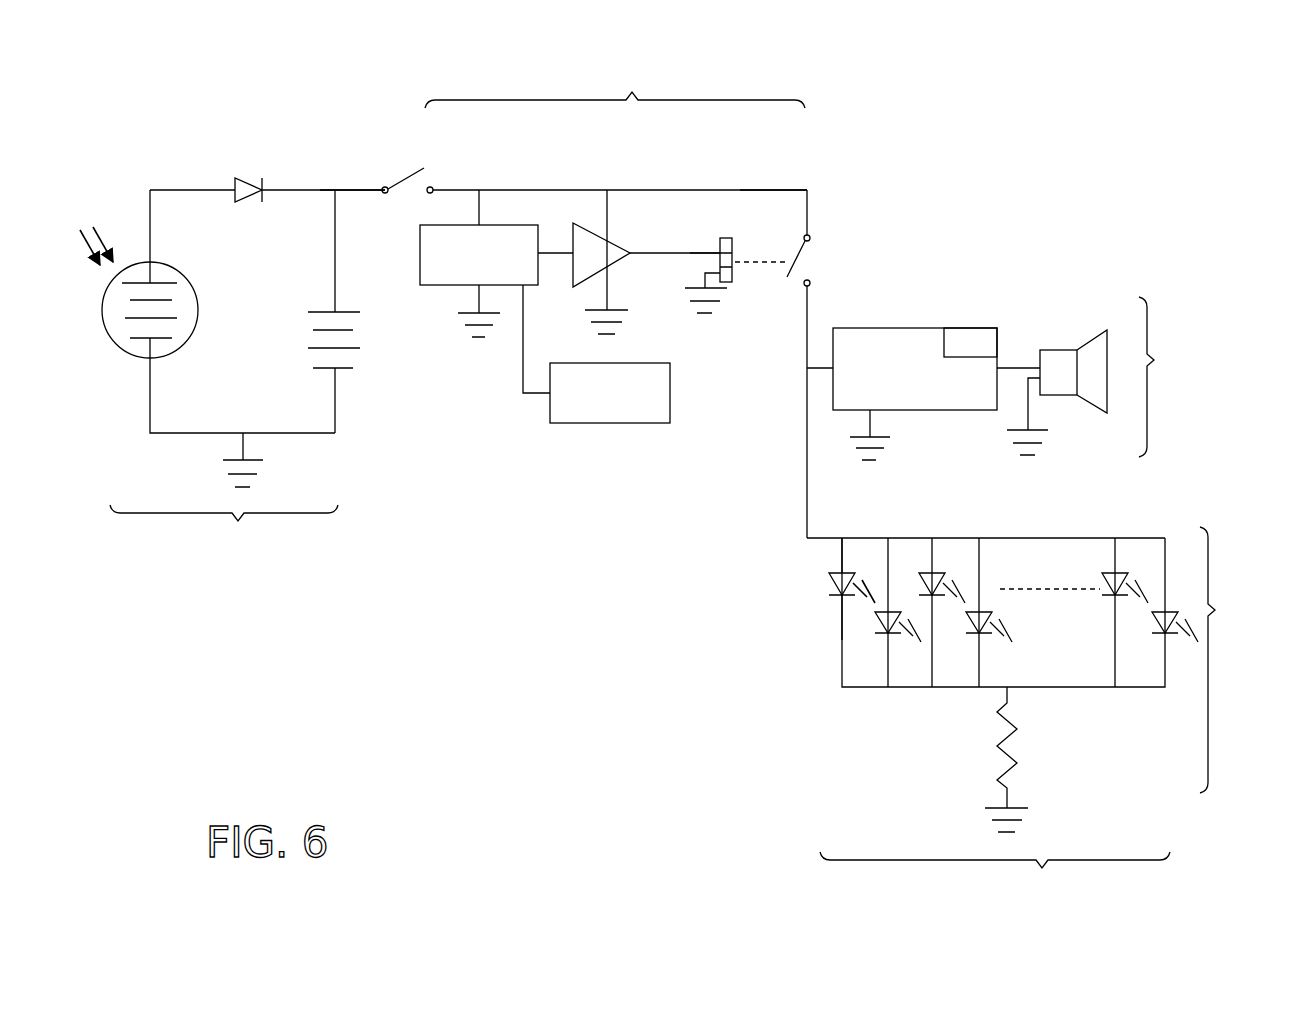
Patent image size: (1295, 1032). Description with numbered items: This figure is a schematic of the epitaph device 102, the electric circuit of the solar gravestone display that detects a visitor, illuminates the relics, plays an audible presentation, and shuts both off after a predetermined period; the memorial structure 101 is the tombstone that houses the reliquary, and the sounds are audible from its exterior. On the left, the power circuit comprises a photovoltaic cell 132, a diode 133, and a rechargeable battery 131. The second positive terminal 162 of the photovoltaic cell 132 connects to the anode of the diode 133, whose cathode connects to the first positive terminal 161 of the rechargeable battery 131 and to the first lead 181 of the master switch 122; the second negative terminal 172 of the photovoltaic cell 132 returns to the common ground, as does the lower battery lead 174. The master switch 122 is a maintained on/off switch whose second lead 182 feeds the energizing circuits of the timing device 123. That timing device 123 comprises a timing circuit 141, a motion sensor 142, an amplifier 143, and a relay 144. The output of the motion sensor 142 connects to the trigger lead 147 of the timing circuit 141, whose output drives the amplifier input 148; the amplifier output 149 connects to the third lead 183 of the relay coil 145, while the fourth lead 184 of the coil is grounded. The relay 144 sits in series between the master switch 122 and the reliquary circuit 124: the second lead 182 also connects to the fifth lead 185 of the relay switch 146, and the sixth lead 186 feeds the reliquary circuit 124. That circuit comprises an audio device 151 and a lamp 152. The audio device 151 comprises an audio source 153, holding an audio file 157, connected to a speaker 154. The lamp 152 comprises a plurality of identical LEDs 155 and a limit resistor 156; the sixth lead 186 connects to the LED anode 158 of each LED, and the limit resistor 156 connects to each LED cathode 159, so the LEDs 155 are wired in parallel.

The memorial structure 101 is at (224, 532).
The epitaph device 102 is at (140, 136).
The master switch 122 is at (402, 177).
The timing device 123 is at (615, 84).
The reliquary circuit 124 is at (995, 877).
The rechargeable battery 131 is at (360, 337).
The photovoltaic cell 132 is at (110, 338).
The diode 133 is at (248, 178).
The timing circuit 141 is at (442, 285).
The motion sensor 142 is at (582, 423).
The amplifier 143 is at (617, 237).
The relay 144 is at (765, 207).
The relay coil 145 is at (727, 285).
The relay switch 146 is at (812, 262).
The trigger lead 147 is at (523, 330).
The amplifier input 148 is at (562, 253).
The amplifier output 149 is at (640, 252).
The audio device 151 is at (1175, 377).
The lamp 152 is at (988, 679).
The audio source 153 is at (933, 338).
The speaker 154 is at (1065, 350).
The LEDs 155 is at (832, 598).
The limit resistor 156 is at (1017, 748).
The audio file 157 is at (983, 328).
The LED anode 158 is at (840, 560).
The LED cathode 159 is at (840, 603).
The first positive terminal 161 is at (335, 302).
The second positive terminal 162 is at (158, 262).
The second negative terminal 172 is at (150, 380).
The battery negative terminal wire 174 is at (332, 372).
The first lead 181 is at (355, 188).
The second lead 182 is at (445, 185).
The third lead 183 is at (708, 253).
The fourth lead 184 is at (712, 268).
The fifth lead 185 is at (808, 218).
The sixth lead 186 is at (808, 298).